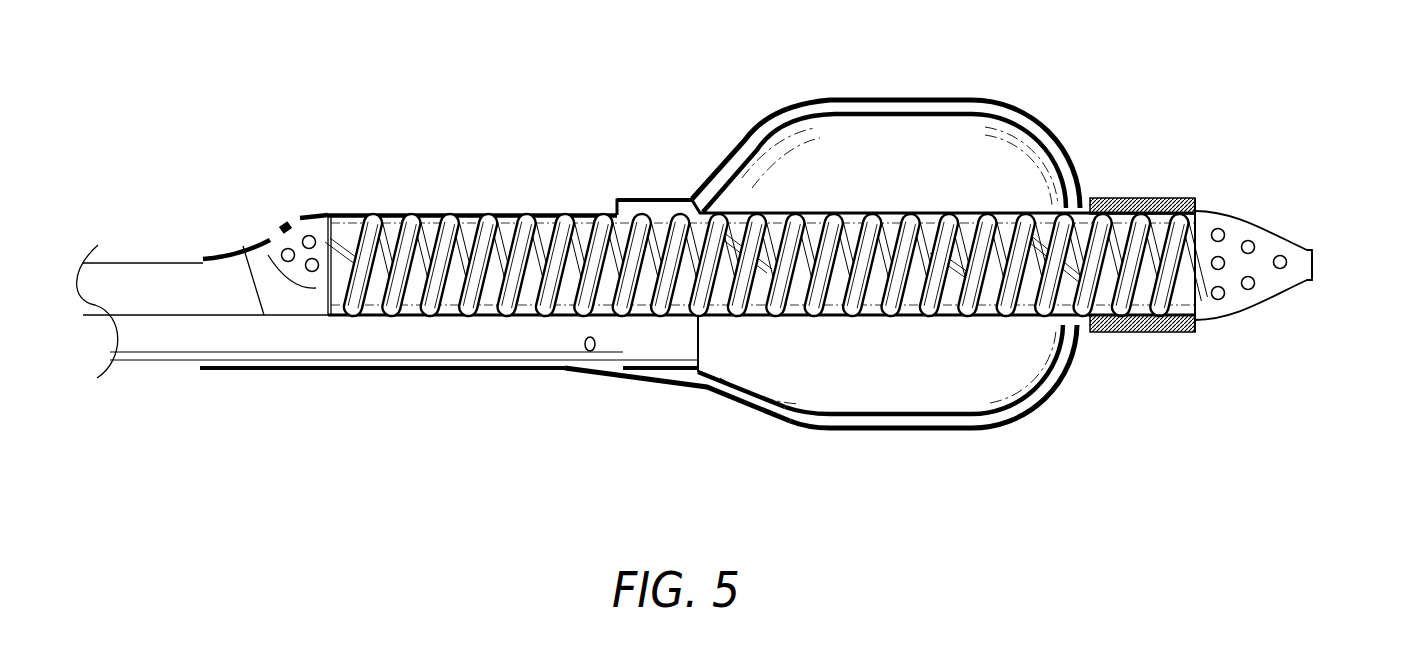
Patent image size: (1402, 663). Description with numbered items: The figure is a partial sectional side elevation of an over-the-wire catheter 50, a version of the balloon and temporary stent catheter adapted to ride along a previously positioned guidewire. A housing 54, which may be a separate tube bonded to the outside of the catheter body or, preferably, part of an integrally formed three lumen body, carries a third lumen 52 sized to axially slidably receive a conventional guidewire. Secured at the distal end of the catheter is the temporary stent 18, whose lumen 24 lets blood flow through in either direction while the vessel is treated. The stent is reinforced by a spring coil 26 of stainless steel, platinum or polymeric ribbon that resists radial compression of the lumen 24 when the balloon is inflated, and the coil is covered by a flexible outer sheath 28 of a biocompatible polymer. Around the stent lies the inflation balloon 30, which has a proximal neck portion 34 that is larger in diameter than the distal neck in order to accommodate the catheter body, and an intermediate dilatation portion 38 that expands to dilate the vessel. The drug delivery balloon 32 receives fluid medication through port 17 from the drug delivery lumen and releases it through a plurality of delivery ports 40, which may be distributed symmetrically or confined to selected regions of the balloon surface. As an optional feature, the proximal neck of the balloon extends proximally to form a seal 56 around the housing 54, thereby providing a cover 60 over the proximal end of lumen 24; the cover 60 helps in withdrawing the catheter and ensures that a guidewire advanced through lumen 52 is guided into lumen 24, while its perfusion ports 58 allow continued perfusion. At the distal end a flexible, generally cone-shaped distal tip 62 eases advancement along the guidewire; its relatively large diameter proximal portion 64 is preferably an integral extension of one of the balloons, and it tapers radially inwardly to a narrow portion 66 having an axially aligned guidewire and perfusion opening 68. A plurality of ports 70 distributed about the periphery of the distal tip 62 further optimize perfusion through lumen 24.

The port 17 is at (590, 352).
The temporary stent 18 is at (452, 203).
The lumen 24 is at (268, 242).
The spring coil 26 is at (365, 232).
The outer sheath 28 is at (513, 212).
The inflation balloon 30 is at (1025, 405).
The drug delivery balloon 32 is at (760, 421).
The proximal neck portion 34 is at (668, 212).
The intermediate dilatation portion 38 is at (955, 128).
The delivery ports 40 is at (898, 99).
The over-the-wire catheter 50 is at (590, 85).
The third lumen 52 is at (272, 290).
The housing 54 is at (145, 265).
The seal 56 is at (243, 246).
The perfusion ports 58 is at (293, 209).
The cover 60 is at (279, 223).
The distal tip 62 is at (1262, 210).
The proximal portion 64 is at (1212, 208).
The narrow portion 66 is at (1302, 290).
The guidewire and perfusion opening 68 is at (1320, 265).
The ports 70 is at (1248, 287).